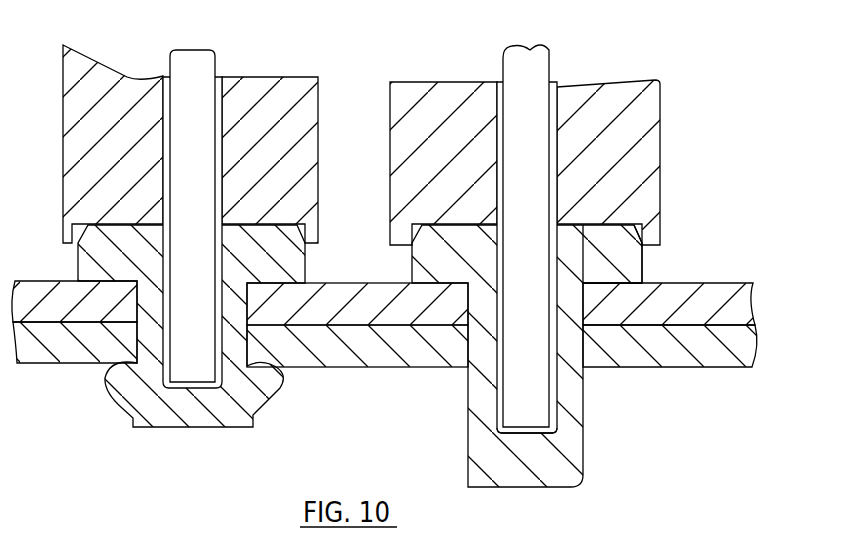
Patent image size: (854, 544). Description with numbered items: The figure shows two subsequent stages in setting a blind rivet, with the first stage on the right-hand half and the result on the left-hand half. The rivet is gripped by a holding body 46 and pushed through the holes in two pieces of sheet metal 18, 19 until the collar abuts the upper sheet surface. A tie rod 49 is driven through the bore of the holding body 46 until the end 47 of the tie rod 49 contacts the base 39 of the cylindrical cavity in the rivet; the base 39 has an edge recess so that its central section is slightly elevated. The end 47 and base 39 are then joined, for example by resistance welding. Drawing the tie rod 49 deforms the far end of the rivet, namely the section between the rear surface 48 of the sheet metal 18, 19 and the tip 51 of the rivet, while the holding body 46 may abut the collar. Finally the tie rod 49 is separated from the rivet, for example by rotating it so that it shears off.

The sheet metal 18 is at (735, 313).
The sheet metal 19 is at (735, 352).
The base 39 is at (545, 443).
The holding body 46 is at (641, 168).
The end of the tie rod 47 is at (517, 418).
The rear surface 48 is at (638, 368).
The tie rod 49 is at (193, 80).
The tip of the blind rivet 51 is at (468, 462).